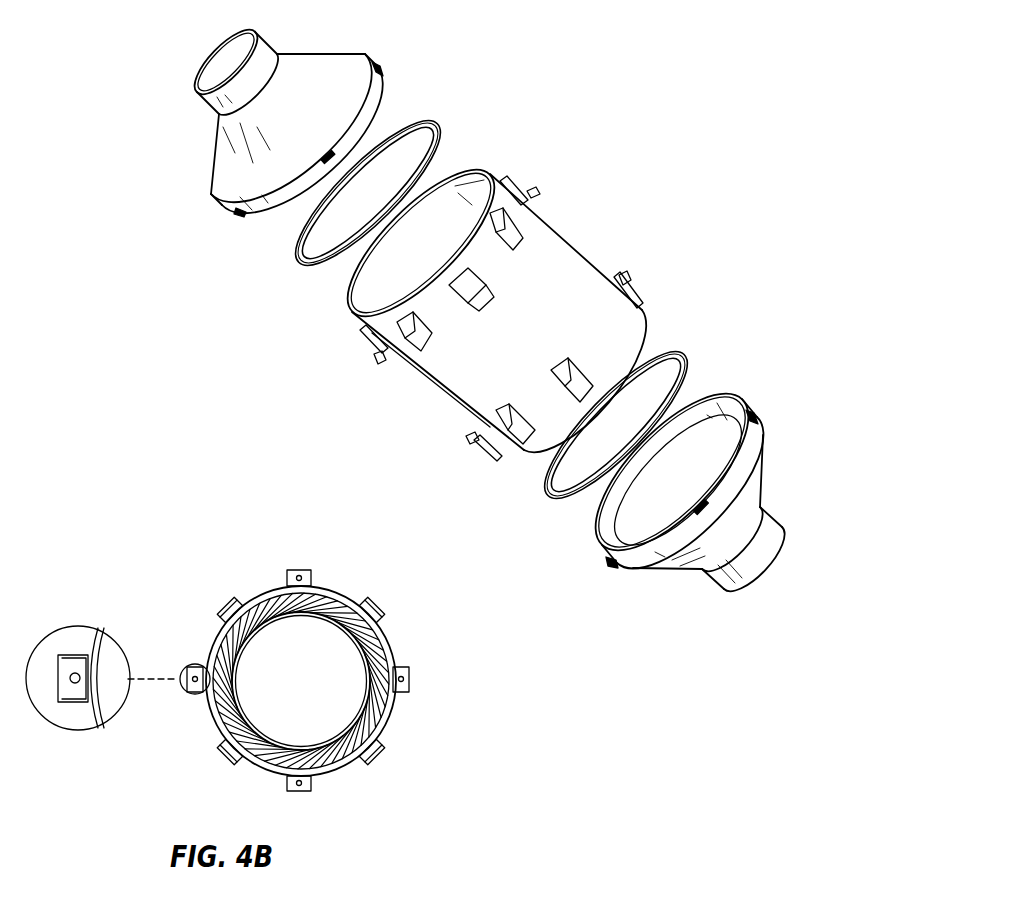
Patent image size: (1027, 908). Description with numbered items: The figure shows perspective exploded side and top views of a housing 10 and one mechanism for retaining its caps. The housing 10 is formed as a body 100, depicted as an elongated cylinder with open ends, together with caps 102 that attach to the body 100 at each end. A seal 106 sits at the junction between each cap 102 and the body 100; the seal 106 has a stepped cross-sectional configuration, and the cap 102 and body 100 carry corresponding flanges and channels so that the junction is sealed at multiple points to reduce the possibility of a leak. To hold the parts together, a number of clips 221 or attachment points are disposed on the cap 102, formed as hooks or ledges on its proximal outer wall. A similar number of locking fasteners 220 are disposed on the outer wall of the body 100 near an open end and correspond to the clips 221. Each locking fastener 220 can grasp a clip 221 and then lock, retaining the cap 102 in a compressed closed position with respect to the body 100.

In FIG. 4A, the housing 10 is at (590, 184).
In FIG. 4A, the body 100 is at (560, 278).
In FIG. 4B, the body 100 is at (257, 767).
In FIG. 4A, the cap 102 is at (240, 155).
In FIG. 4A, the seal 106 is at (304, 266).
In FIG. 4A, the locking fastener 220 is at (362, 347).
In FIG. 4B, the locking fastener 220 is at (383, 755).
In FIG. 4A, the clip 221 is at (378, 65).